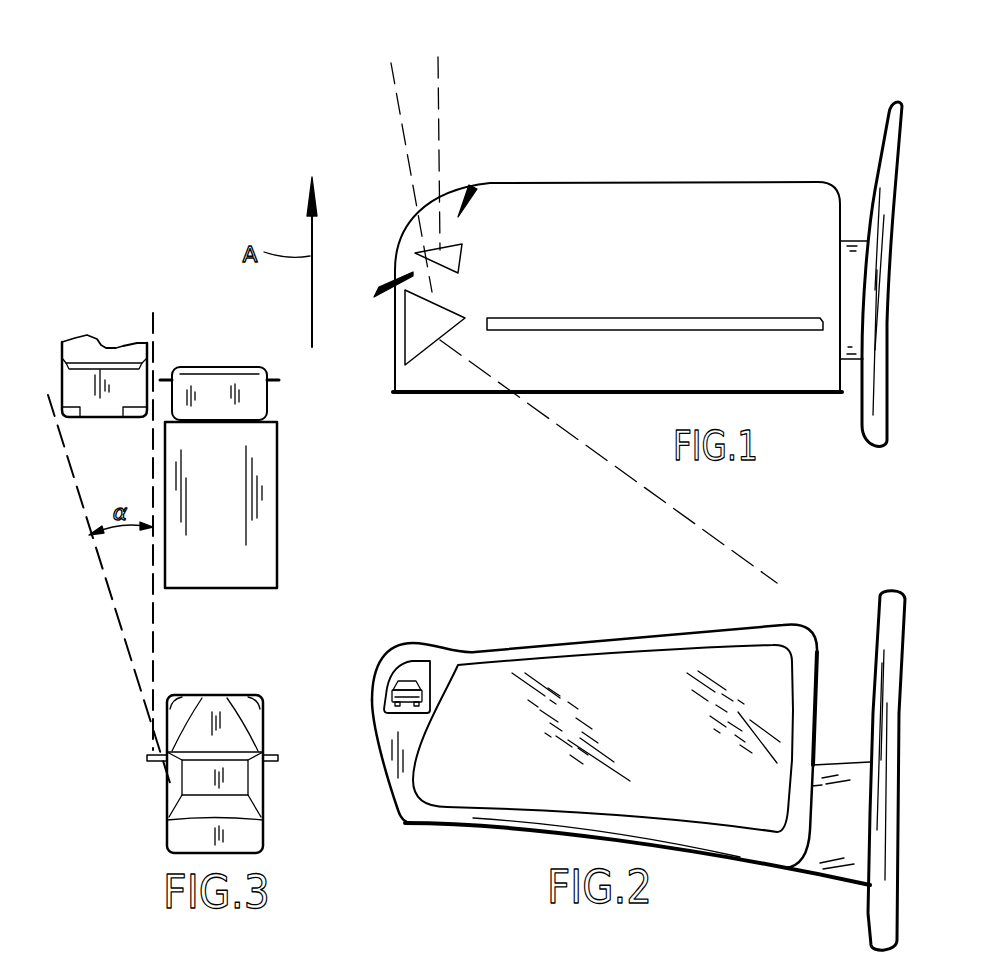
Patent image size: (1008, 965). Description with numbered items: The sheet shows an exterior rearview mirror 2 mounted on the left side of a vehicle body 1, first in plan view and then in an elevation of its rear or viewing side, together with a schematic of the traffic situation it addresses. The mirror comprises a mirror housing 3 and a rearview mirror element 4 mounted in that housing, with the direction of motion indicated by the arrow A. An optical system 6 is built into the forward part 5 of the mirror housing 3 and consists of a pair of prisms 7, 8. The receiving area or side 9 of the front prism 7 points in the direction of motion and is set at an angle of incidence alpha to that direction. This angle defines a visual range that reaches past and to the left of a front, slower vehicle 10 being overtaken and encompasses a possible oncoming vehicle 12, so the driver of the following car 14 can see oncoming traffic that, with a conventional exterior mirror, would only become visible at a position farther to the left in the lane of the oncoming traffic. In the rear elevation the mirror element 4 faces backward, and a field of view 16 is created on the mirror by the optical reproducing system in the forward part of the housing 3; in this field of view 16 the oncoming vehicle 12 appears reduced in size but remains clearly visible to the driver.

In FIG. 1, the vehicle body 1 is at (883, 137).
In FIG. 2, the vehicle body 1 is at (876, 619).
In FIG. 1, the exterior rearview mirror 2 is at (620, 168).
In FIG. 2, the exterior rearview mirror 2 is at (562, 630).
In FIG. 1, the mirror housing 3 is at (793, 182).
In FIG. 1, the rearview mirror element 4 is at (680, 318).
In FIG. 2, the rearview mirror element 4 is at (667, 680).
In FIG. 1, the forward part of mirror housing 5 is at (377, 293).
In FIG. 1, the optical system 6 is at (474, 186).
In FIG. 1, the front prism 7 is at (396, 268).
In FIG. 1, the prism 8 is at (415, 328).
In FIG. 1, the receiving area or side of front prism 9 is at (437, 262).
In FIG. 3, the front slower vehicle 10 is at (278, 450).
In FIG. 3, the oncoming vehicle 12 is at (132, 342).
In FIG. 3, the following car 14 is at (263, 832).
In FIG. 2, the field of view 16 is at (418, 668).